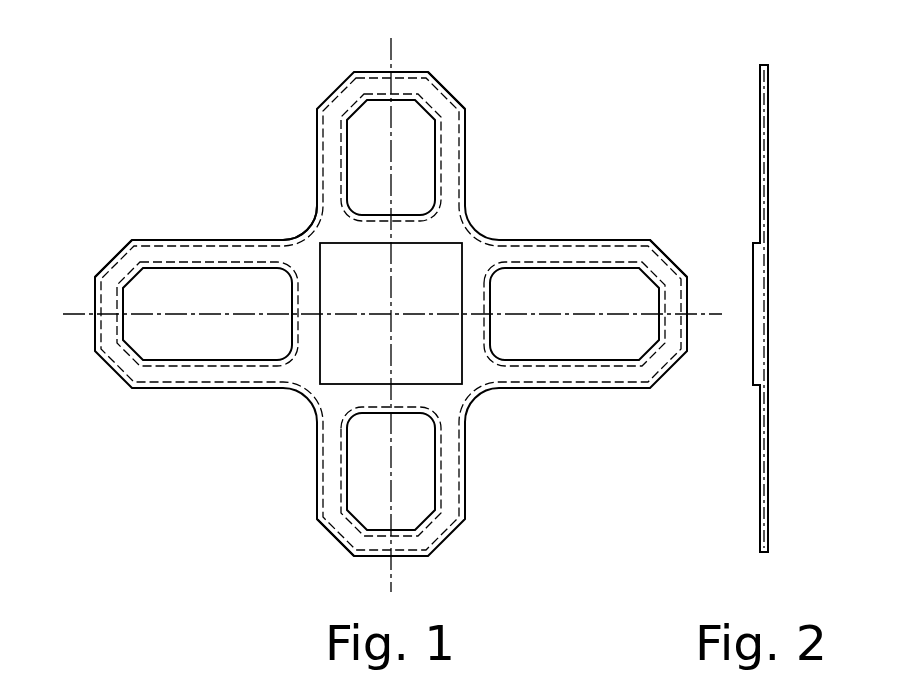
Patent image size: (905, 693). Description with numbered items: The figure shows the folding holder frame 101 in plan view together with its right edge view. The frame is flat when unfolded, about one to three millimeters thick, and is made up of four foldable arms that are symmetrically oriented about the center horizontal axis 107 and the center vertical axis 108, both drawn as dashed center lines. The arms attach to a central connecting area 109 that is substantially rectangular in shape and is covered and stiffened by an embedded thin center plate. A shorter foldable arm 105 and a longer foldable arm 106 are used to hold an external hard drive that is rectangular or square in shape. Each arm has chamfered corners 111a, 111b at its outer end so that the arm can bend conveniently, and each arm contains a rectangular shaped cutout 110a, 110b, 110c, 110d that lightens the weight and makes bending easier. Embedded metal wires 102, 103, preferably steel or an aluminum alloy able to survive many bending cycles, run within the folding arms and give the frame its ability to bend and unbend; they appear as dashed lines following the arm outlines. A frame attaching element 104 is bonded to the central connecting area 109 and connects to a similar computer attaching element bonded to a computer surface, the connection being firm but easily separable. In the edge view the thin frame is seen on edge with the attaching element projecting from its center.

The folding holder frame 101 is at (371, 308).
The embedded metal wire 102 is at (462, 140).
The embedded metal wire 103 is at (455, 112).
The frame attaching element 104 is at (465, 248).
The shorter foldable arm 105 is at (452, 85).
The longer foldable arm 106 is at (625, 242).
The center horizontal axis 107 is at (78, 317).
The center vertical axis 108 is at (391, 60).
The central connecting area 109 is at (297, 237).
The rectangular shaped cutout 110a is at (360, 148).
The rectangular shaped cutout 110b is at (360, 463).
The rectangular shaped cutout 110c is at (197, 337).
The rectangular shaped cutout 110d is at (588, 335).
The chamfered corner 111a is at (330, 543).
The chamfered corner 111b is at (108, 252).